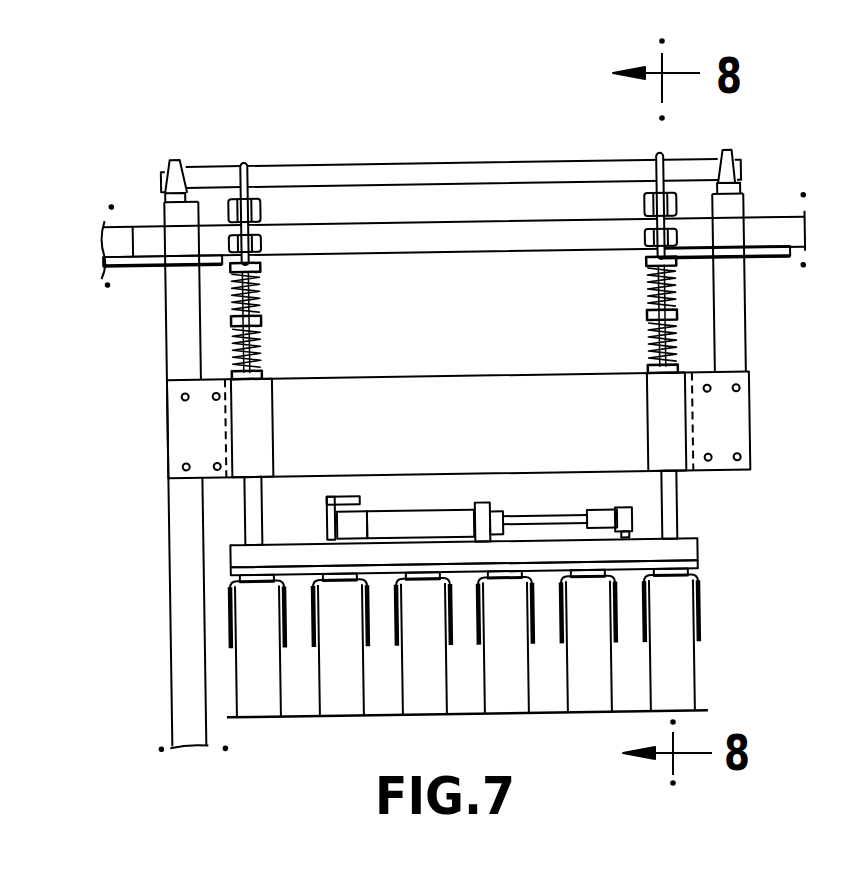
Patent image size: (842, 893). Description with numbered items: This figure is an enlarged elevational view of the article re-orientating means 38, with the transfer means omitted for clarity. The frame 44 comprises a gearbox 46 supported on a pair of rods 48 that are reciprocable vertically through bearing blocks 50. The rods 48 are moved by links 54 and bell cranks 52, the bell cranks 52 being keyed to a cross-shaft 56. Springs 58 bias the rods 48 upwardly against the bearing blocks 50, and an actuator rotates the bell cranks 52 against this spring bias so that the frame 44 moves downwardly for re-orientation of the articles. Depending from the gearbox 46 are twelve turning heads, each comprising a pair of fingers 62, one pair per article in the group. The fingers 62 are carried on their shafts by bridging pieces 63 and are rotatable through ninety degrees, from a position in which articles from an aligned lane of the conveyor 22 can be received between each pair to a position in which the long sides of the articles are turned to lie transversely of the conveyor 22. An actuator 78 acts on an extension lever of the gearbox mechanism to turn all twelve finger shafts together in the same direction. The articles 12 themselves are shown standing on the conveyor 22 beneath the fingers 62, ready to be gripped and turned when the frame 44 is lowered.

The article re-orientating means 38 is at (228, 127).
The cross-shaft 56 is at (462, 167).
The bell cranks 52 is at (241, 162).
The links 54 is at (266, 223).
The springs 58 is at (263, 297).
The rods 48 is at (262, 348).
The bearing blocks 50 is at (263, 419).
The gearbox 46 is at (697, 538).
The actuator 78 is at (447, 520).
The frame 44 is at (716, 557).
The bridging pieces 63 is at (675, 582).
The fingers 62 is at (652, 623).
The container 12 is at (682, 688).
The conveyor 22 is at (543, 713).